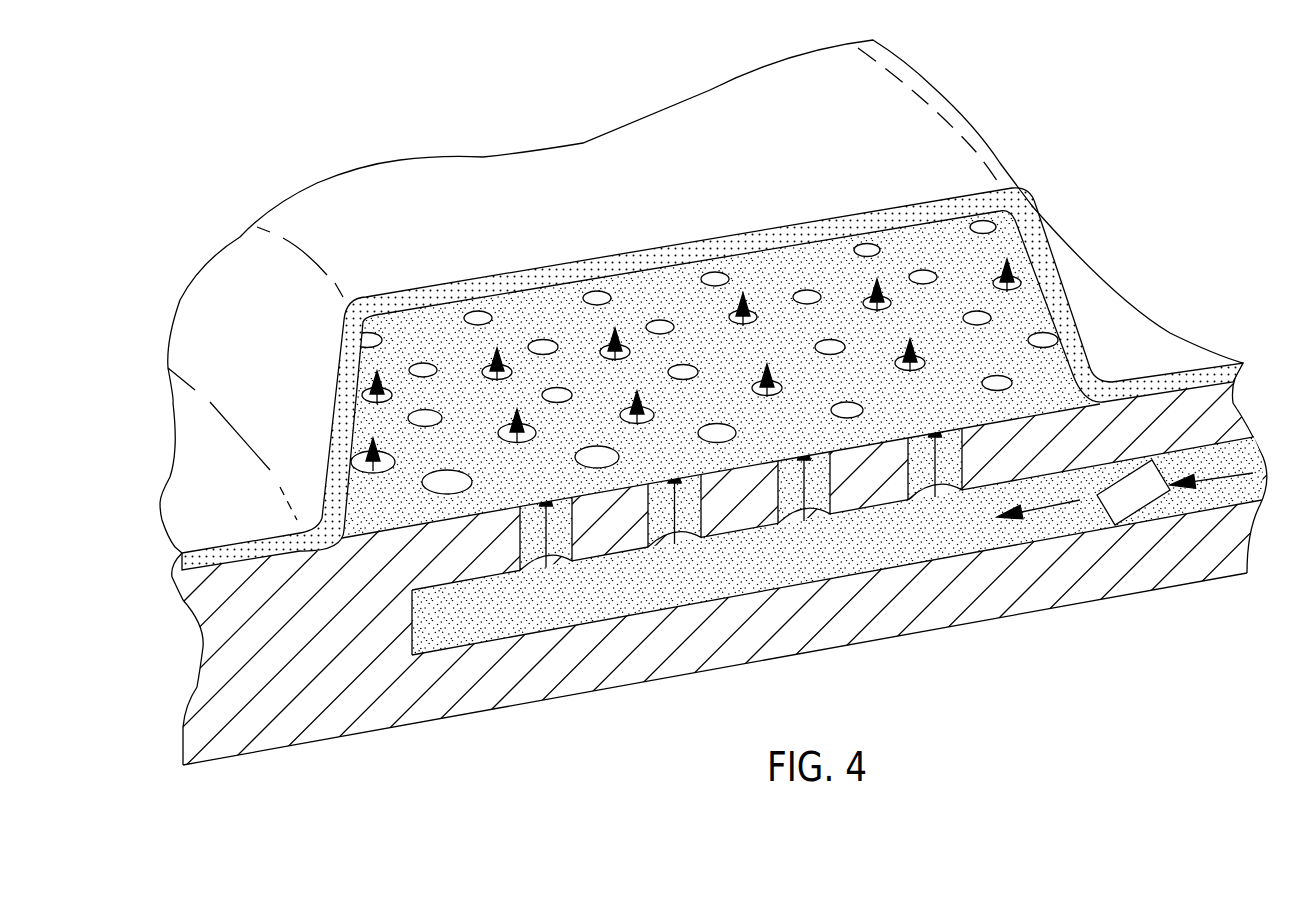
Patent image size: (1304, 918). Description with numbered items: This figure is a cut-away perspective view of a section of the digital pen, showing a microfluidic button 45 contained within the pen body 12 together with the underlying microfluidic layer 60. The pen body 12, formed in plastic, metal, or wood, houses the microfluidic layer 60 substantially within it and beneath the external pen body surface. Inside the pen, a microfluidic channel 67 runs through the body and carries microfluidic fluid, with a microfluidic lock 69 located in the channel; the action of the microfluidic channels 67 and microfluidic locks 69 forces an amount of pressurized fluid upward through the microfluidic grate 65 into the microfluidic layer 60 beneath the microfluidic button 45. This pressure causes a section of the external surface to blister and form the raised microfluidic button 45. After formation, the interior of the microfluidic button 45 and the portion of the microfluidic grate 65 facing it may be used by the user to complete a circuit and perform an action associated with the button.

The pen body 12 is at (210, 457).
The microfluidic button 45 is at (620, 212).
The microfluidic layer 60 is at (1020, 310).
The microfluidic grate 65 is at (546, 562).
The microfluidic channels 67 is at (877, 537).
The microfluidic lock 69 is at (1132, 505).